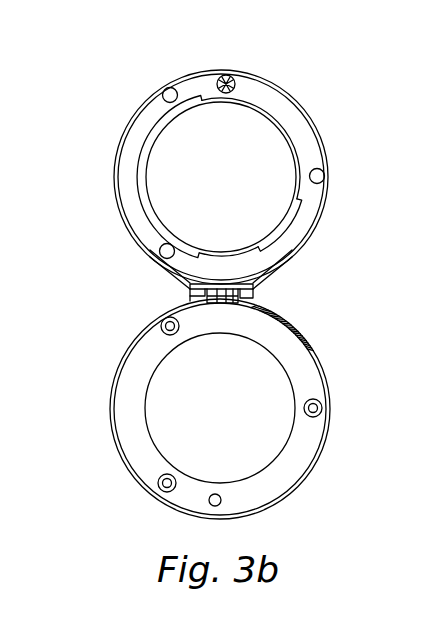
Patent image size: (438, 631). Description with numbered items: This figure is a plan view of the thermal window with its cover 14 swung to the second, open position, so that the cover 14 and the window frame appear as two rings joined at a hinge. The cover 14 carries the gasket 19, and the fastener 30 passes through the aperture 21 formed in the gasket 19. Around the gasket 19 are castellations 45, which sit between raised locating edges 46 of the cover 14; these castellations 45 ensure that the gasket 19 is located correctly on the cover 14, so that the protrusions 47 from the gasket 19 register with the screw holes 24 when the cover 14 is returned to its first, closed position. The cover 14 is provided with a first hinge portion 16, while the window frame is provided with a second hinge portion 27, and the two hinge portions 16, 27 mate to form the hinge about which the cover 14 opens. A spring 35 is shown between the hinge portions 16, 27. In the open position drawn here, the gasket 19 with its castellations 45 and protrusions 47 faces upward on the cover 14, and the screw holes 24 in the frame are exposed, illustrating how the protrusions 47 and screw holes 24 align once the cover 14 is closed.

The cover 14 is at (130, 232).
The first hinge portion 16 is at (264, 306).
The gasket 19 is at (305, 133).
The aperture 21 is at (222, 76).
The screw holes 24 is at (320, 407).
The second hinge portion 27 is at (190, 287).
The fastener 30 is at (234, 82).
The spring 35 is at (192, 304).
The castellations 45 is at (247, 98).
The raised locating edges 46 is at (138, 171).
The protrusions 47 is at (322, 174).